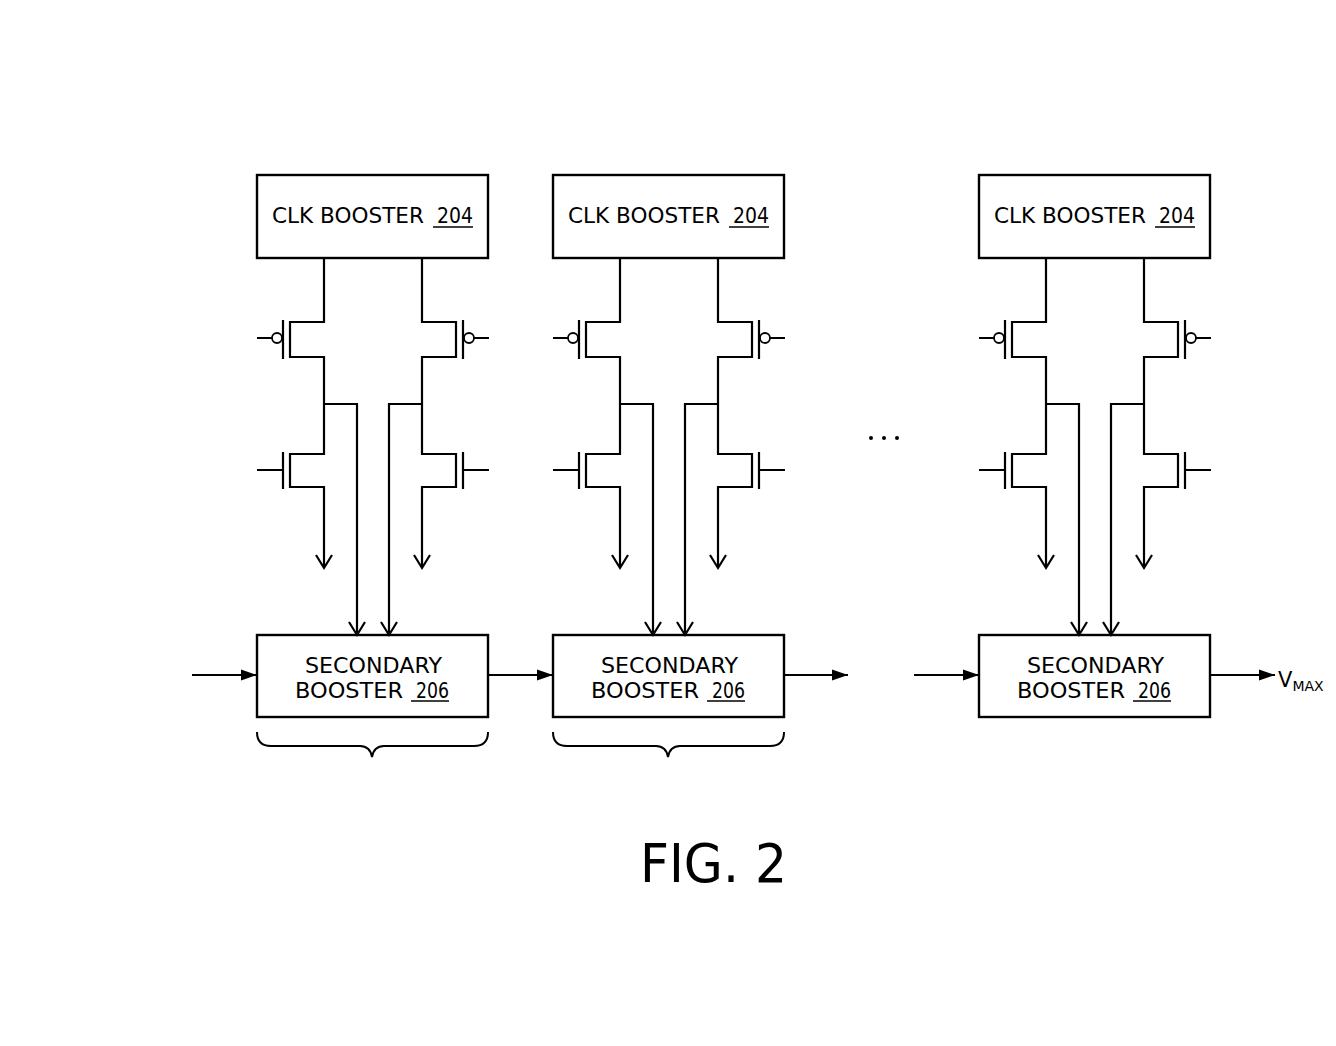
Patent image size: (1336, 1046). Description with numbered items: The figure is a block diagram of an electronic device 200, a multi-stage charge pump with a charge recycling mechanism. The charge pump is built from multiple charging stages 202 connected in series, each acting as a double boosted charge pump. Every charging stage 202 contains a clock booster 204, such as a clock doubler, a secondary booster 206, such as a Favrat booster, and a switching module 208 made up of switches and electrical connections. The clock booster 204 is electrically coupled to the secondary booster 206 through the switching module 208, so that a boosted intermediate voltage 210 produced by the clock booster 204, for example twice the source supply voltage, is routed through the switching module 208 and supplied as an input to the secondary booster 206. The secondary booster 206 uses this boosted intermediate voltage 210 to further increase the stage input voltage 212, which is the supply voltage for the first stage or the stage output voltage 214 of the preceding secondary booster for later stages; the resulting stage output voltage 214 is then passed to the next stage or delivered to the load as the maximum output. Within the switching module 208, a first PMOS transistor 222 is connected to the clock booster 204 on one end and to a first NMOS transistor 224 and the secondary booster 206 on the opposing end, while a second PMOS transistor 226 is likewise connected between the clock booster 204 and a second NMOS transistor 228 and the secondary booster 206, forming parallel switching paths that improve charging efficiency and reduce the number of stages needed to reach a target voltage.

The electronic device 200 is at (376, 100).
The charging stage 202 is at (520, 760).
The clock booster 204 is at (733, 216).
The secondary booster 206 is at (733, 676).
The switching module 208 is at (248, 258).
The boosted intermediate voltage 210 is at (1177, 593).
The stage input voltage 212 is at (230, 673).
The stage output voltage 214 is at (523, 676).
The first PMOS transistor 222 is at (1025, 322).
The first NMOS transistor 224 is at (1030, 452).
The second PMOS transistor 226 is at (1163, 322).
The second NMOS transistor 228 is at (1158, 452).